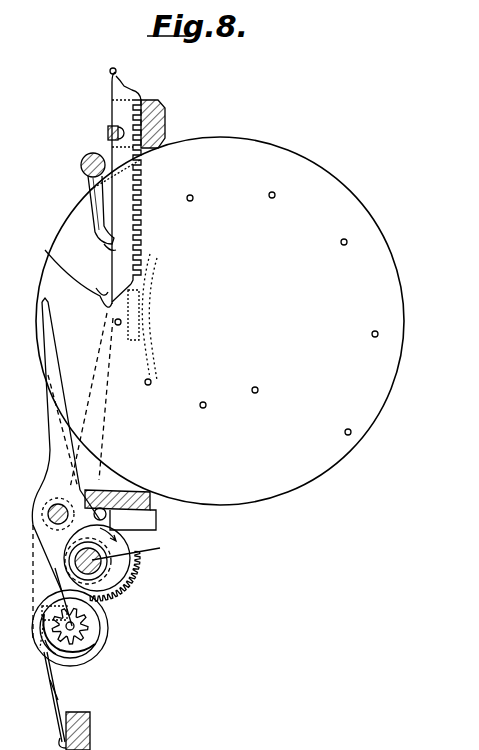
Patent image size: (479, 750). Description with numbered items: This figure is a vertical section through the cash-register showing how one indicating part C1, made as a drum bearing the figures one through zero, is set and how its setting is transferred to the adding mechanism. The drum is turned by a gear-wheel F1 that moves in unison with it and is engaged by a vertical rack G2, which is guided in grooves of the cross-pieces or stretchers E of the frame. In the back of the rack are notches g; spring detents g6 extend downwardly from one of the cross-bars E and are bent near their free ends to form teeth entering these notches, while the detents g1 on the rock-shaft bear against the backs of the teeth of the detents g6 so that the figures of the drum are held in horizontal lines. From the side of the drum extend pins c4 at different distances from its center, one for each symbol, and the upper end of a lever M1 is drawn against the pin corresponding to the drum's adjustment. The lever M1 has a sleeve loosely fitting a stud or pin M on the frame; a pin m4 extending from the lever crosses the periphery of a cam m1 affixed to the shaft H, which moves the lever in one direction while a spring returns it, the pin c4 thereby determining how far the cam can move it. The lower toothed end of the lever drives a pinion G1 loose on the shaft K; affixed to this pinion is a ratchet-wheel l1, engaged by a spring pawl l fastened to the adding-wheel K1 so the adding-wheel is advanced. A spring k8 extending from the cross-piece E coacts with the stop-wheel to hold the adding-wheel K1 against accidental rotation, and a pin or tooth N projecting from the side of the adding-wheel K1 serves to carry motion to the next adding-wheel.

The indicating part C1 is at (322, 467).
The pins c4 is at (282, 313).
The rack G2 is at (142, 100).
The cross-pieces or stretchers E is at (165, 122).
The notches g is at (110, 75).
The detents g1 is at (100, 230).
The detents g6 is at (108, 250).
The gear-wheel F1 is at (150, 358).
The lever M1 is at (53, 417).
The stud or pin M is at (44, 516).
The pins m4 is at (107, 518).
The cam m1 is at (121, 546).
The shaft H is at (119, 558).
The adding-wheel K1 is at (105, 640).
The shaft K is at (80, 630).
The ratchet-wheel l1 is at (88, 630).
The pinion G1 is at (48, 620).
The pawl l is at (58, 644).
The pin or tooth N is at (48, 668).
The springs k8 is at (58, 696).